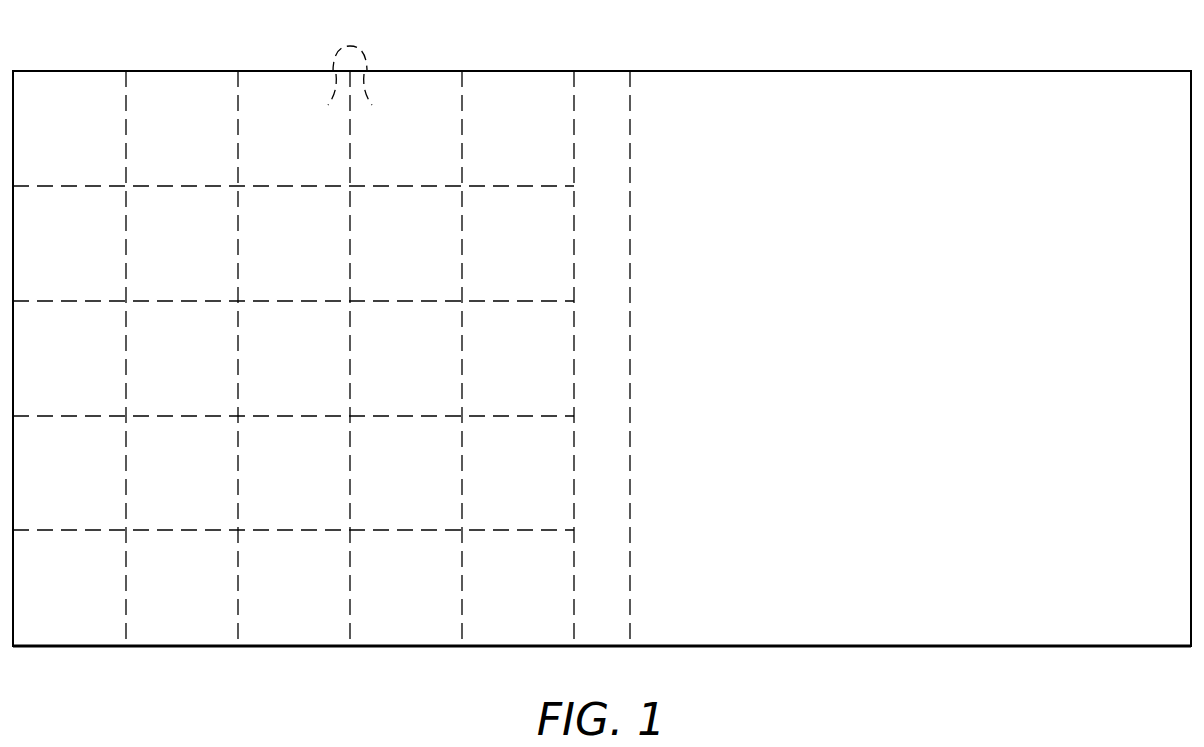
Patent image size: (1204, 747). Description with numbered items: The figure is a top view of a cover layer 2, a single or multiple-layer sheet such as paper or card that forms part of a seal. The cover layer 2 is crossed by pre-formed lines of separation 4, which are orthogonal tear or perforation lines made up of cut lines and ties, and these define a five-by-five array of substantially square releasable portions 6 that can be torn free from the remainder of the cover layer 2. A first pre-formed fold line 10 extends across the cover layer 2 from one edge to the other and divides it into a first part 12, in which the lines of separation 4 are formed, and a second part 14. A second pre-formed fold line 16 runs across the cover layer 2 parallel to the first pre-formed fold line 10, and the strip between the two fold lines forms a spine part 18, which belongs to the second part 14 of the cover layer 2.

The cover layer 2 is at (1156, 57).
The pre-formed line of separation 4 is at (238, 126).
The releasable portion 6 is at (350, 64).
The first pre-formed fold line 10 is at (574, 125).
The first part 12 is at (13, 655).
The second part 14 is at (577, 655).
The second pre-formed fold line 16 is at (630, 125).
The spine part 18 is at (602, 358).